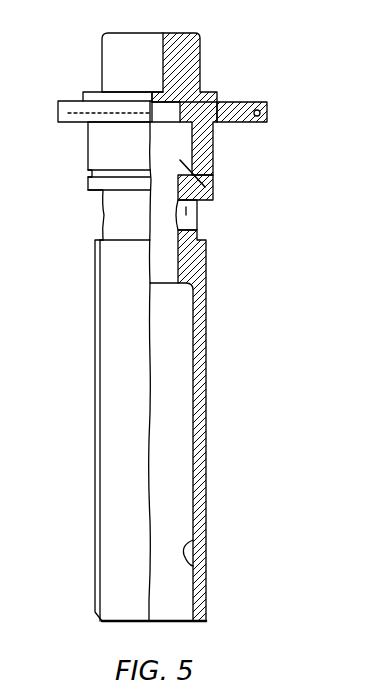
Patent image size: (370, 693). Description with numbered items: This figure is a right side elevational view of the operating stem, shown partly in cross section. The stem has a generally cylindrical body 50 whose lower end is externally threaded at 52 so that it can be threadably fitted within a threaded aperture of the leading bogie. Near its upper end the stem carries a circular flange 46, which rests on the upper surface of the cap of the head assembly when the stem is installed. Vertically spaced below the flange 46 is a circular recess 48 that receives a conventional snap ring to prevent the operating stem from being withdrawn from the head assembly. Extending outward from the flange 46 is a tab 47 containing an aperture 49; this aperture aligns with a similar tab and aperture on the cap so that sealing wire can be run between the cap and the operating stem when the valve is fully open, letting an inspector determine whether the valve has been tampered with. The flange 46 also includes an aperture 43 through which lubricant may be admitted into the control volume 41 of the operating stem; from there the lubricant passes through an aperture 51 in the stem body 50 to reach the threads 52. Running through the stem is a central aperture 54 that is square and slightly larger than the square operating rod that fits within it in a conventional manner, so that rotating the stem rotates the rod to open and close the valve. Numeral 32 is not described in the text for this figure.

The body member 32 is at (200, 62).
The control volume 41 is at (215, 192).
The aperture 43 is at (103, 84).
The circular flange 46 is at (70, 101).
The tab 47 is at (250, 102).
The circular recess 48 is at (215, 174).
The aperture 49 is at (260, 114).
The cylindrical body 50 is at (208, 360).
The aperture 51 is at (188, 212).
The external threads 52 is at (95, 498).
The central aperture 54 is at (203, 567).